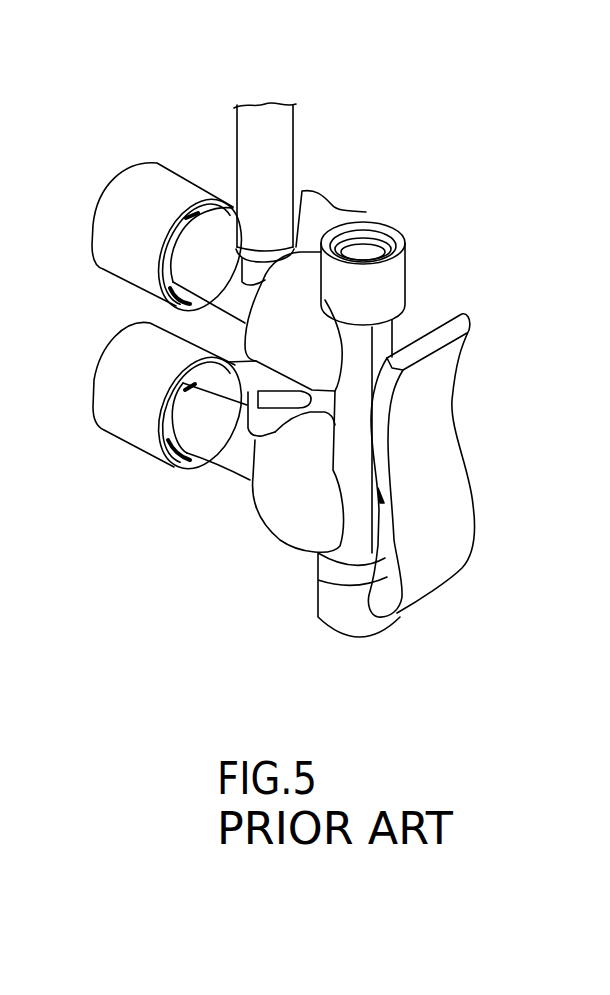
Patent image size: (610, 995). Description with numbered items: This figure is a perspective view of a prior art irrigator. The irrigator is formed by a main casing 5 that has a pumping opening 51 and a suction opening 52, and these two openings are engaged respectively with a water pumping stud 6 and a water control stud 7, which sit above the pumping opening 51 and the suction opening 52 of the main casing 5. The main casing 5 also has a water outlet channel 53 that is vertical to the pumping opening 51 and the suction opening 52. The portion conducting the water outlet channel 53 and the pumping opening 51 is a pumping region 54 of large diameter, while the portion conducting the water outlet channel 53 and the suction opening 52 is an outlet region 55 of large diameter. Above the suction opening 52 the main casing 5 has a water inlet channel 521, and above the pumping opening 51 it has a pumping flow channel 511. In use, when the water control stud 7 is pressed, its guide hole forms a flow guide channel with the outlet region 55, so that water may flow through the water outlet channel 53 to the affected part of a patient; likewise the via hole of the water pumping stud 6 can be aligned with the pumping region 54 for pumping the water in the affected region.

The main casing 5 is at (475, 435).
The pumping opening 51 is at (178, 205).
The water pumping stud 6 is at (213, 265).
The pumping flow channel 511 is at (272, 137).
The suction opening 52 is at (155, 421).
The water control stud 7 is at (212, 438).
The water inlet channel 521 is at (332, 218).
The water outlet channel 53 is at (365, 518).
The pumping region 54 is at (293, 302).
The outlet region 55 is at (298, 505).